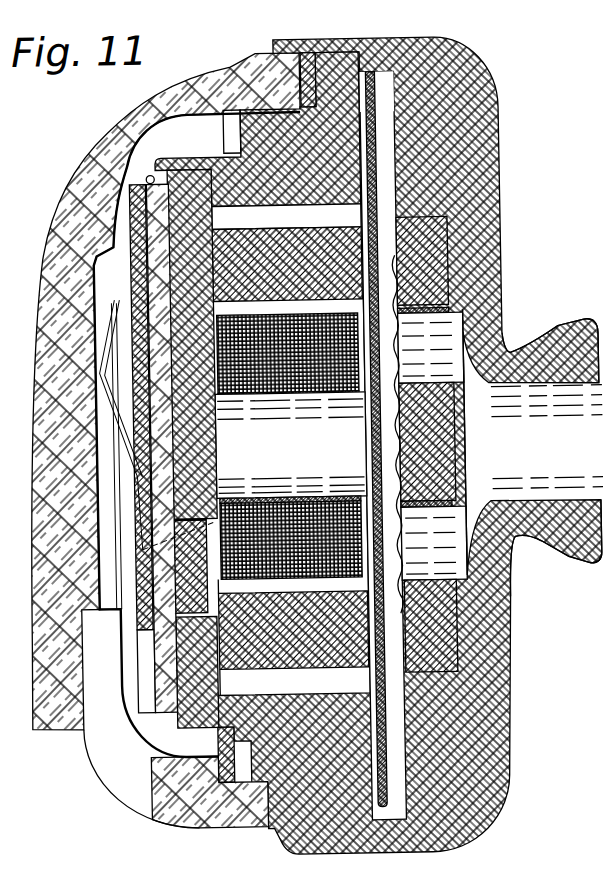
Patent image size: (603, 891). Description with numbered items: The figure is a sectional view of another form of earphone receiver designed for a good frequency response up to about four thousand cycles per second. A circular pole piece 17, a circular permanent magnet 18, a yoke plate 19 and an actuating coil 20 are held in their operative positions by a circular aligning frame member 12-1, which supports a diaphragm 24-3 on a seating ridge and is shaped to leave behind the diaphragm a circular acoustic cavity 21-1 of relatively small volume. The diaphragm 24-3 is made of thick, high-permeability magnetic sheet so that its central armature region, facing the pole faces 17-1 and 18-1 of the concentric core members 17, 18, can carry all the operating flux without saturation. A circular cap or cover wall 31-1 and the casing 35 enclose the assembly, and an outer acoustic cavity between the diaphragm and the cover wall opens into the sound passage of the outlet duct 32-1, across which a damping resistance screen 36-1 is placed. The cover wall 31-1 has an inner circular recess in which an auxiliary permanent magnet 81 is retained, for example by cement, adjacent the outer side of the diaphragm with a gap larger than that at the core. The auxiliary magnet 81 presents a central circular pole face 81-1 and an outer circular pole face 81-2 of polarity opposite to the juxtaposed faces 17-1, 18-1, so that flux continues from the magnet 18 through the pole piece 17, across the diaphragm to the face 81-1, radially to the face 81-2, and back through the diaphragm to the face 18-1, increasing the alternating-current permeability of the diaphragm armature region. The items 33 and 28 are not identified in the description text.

The casing 35 is at (95, 153).
The circular aligning frame member 12-1 is at (209, 110).
The circular acoustic cavity 21-1 is at (291, 209).
The clamp 33 is at (381, 84).
The diaphragm 24-3 is at (383, 134).
The gap channel 28 is at (392, 178).
The cover wall 31-1 is at (491, 141).
The pole face 18-1 is at (381, 204).
The outer circular pole face 81-2 is at (389, 248).
The auxiliary permanent magnet 81 is at (430, 262).
The damping resistance screen 36-1 is at (403, 345).
The central circular pole face 81-1 is at (452, 388).
The circular pole piece 17 is at (498, 534).
The pole face 17-1 is at (409, 506).
The outlet duct 32-1 is at (570, 574).
The circular permanent magnet 18 is at (340, 644).
The yoke plate 19 is at (183, 695).
The actuating coil 20 is at (265, 579).